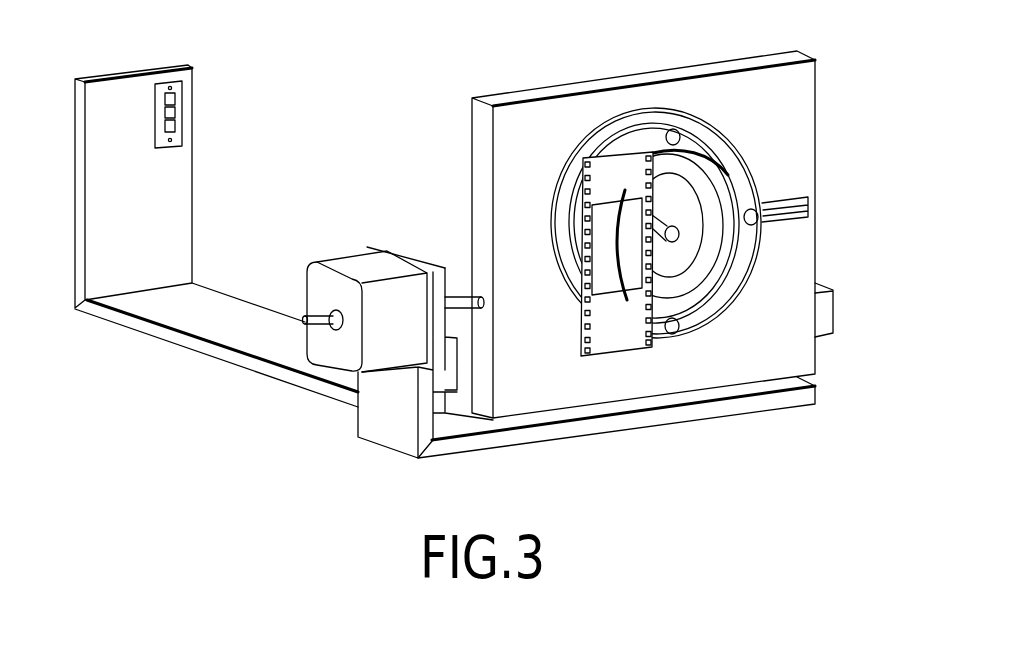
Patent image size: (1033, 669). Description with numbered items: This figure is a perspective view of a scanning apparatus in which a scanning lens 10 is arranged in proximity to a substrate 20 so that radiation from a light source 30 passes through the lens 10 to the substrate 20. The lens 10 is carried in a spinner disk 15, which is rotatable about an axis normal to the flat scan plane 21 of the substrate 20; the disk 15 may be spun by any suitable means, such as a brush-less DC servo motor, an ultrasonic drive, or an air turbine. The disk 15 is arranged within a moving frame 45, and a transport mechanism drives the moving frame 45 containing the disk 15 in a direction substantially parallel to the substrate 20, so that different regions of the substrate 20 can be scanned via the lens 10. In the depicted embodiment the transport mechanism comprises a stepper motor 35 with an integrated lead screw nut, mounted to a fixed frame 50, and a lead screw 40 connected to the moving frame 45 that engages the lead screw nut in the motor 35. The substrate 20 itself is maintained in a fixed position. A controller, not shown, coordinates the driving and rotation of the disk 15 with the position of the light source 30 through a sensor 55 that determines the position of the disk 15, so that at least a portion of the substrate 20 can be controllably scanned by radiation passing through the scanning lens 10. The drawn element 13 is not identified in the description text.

The scanning lens 10 is at (675, 130).
The lens 13 is at (618, 203).
The spinner disk 15 is at (727, 181).
The substrate 20 is at (633, 348).
The flat scan plane 21 is at (602, 293).
The light source 30 is at (176, 105).
The stepper motor 35 is at (335, 356).
The lead screw 40 is at (473, 300).
The moving frame 45 is at (806, 365).
The fixed frame 50 is at (512, 437).
The sensor 55 is at (794, 200).